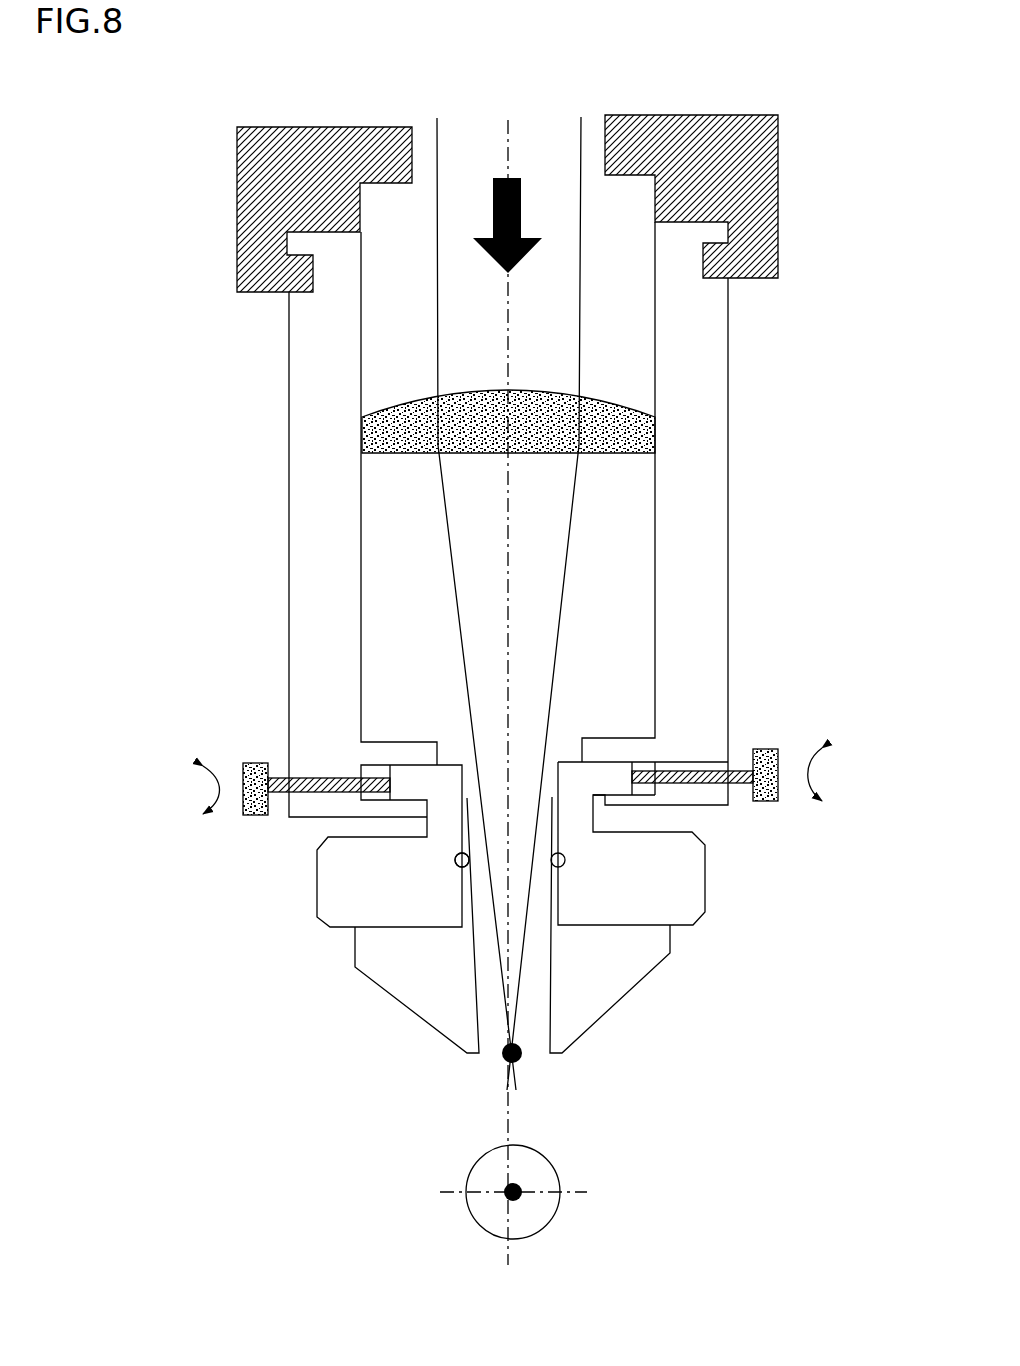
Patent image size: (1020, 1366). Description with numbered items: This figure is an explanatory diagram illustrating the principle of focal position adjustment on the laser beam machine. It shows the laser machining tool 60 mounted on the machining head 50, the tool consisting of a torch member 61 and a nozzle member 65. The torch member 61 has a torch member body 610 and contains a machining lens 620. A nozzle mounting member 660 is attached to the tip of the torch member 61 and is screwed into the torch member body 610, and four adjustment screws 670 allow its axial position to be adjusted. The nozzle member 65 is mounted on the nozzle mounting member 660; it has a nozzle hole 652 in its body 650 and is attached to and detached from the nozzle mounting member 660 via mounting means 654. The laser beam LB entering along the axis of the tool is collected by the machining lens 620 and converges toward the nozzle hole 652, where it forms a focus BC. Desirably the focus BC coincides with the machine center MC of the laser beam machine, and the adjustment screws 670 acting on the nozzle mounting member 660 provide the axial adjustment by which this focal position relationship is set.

The machining head 50 is at (707, 140).
The laser machining tool 60 is at (521, 519).
The torch member body 610 is at (300, 395).
The torch member 61 is at (748, 657).
The machining lens 620 is at (650, 418).
The machine center MC is at (553, 540).
The nozzle member 65 is at (508, 893).
The nozzle mounting member 660 is at (692, 873).
The adjustment screws 670 is at (262, 763).
The body 650 is at (611, 1008).
The nozzle hole 652 is at (545, 1030).
The mounting means 654 is at (458, 864).
The laser beam LB is at (509, 691).
The focus BC is at (520, 1197).